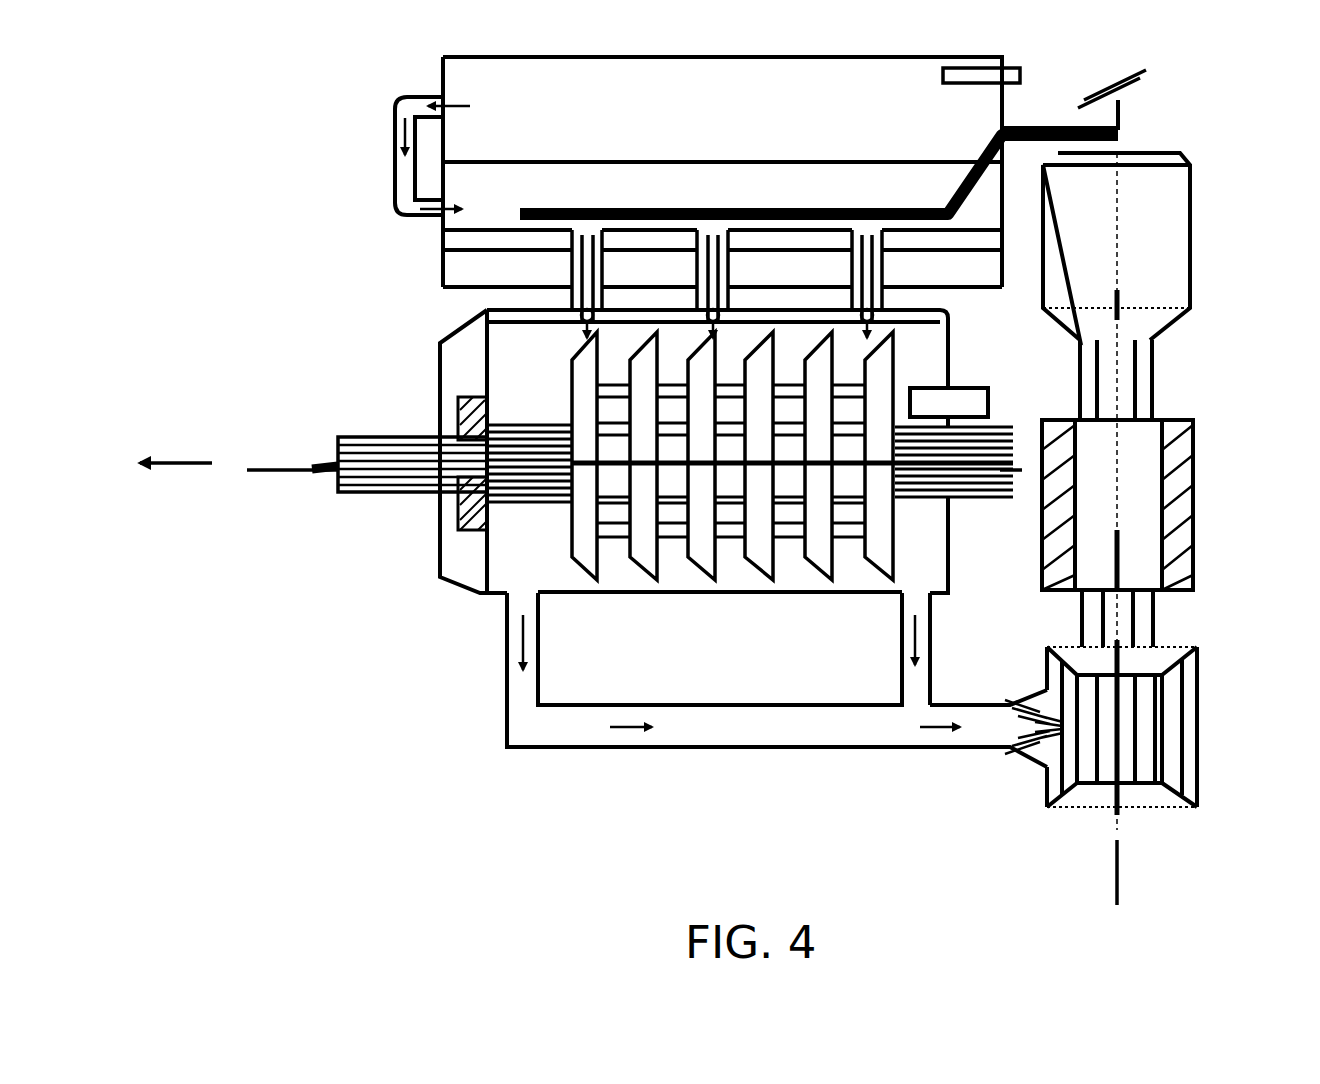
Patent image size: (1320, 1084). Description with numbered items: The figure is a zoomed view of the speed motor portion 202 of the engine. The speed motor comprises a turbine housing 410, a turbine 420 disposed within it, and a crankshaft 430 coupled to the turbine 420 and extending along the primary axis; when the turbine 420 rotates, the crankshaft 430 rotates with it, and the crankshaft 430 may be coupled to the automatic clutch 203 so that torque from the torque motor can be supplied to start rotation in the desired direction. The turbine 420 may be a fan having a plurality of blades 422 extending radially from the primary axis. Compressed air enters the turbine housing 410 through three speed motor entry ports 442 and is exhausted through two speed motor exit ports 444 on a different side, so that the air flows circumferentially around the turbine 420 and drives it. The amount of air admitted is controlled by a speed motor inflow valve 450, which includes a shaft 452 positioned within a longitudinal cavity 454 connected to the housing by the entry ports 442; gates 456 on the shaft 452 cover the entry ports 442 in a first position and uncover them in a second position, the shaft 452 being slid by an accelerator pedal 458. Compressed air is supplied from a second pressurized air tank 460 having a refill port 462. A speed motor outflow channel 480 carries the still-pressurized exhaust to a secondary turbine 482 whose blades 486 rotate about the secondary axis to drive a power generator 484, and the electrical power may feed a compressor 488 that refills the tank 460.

The speed motor portion 202 is at (772, 862).
The automatic clutch 203 is at (176, 446).
The turbine housing 410 is at (513, 352).
The turbine 420 is at (615, 545).
The blades 422 is at (752, 572).
The crankshaft 430 is at (387, 485).
The speed motor entry ports 442 is at (575, 300).
The speed motor exit ports 444 is at (518, 612).
The speed motor inflow valve 450 is at (440, 237).
The shaft 452 is at (955, 225).
The longitudinal cavity 454 is at (440, 183).
The gates 456 is at (905, 237).
The accelerator pedal 458 is at (1125, 98).
The second pressurized air tank 460 is at (737, 124).
The refill port 462 is at (1020, 75).
The speed motor outflow channel 480 is at (708, 745).
The secondary turbine 482 is at (1045, 796).
The power generator 484 is at (1195, 555).
The blades 486 is at (1185, 735).
The compressor 488 is at (1172, 233).